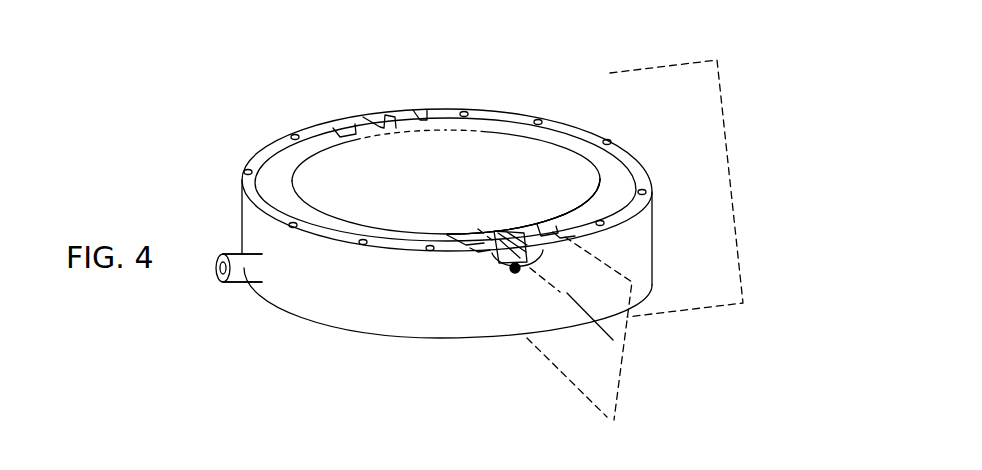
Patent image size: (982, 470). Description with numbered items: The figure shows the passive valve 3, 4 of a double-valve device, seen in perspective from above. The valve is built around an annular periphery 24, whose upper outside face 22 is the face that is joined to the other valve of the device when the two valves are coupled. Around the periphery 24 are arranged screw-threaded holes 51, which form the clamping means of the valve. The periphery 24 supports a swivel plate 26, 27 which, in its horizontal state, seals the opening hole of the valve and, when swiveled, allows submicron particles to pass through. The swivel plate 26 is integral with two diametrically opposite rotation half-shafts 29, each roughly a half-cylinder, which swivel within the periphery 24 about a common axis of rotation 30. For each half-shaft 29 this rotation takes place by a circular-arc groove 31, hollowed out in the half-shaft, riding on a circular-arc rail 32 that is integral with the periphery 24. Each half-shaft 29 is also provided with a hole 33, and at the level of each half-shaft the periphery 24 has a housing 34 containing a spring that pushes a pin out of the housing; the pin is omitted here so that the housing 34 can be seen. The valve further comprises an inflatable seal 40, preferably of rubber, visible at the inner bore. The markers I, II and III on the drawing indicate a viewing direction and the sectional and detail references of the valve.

The valve 3 is at (247, 221).
The valve 4 is at (247, 221).
The outside face 22 is at (455, 140).
The periphery 24 is at (646, 170).
The swivel plate 26 is at (537, 156).
The inner wall 27 is at (537, 156).
The rotation half-shaft 29 is at (380, 117).
The axis of rotation 30 is at (623, 300).
The groove 31 is at (470, 247).
The rail 32 is at (553, 232).
The hole 33 is at (504, 218).
The housing 34 is at (518, 273).
The inflatable seal 40 is at (293, 199).
The holes 51 is at (246, 170).
The view direction I is at (632, 378).
The section II is at (632, 357).
The detail III is at (735, 182).